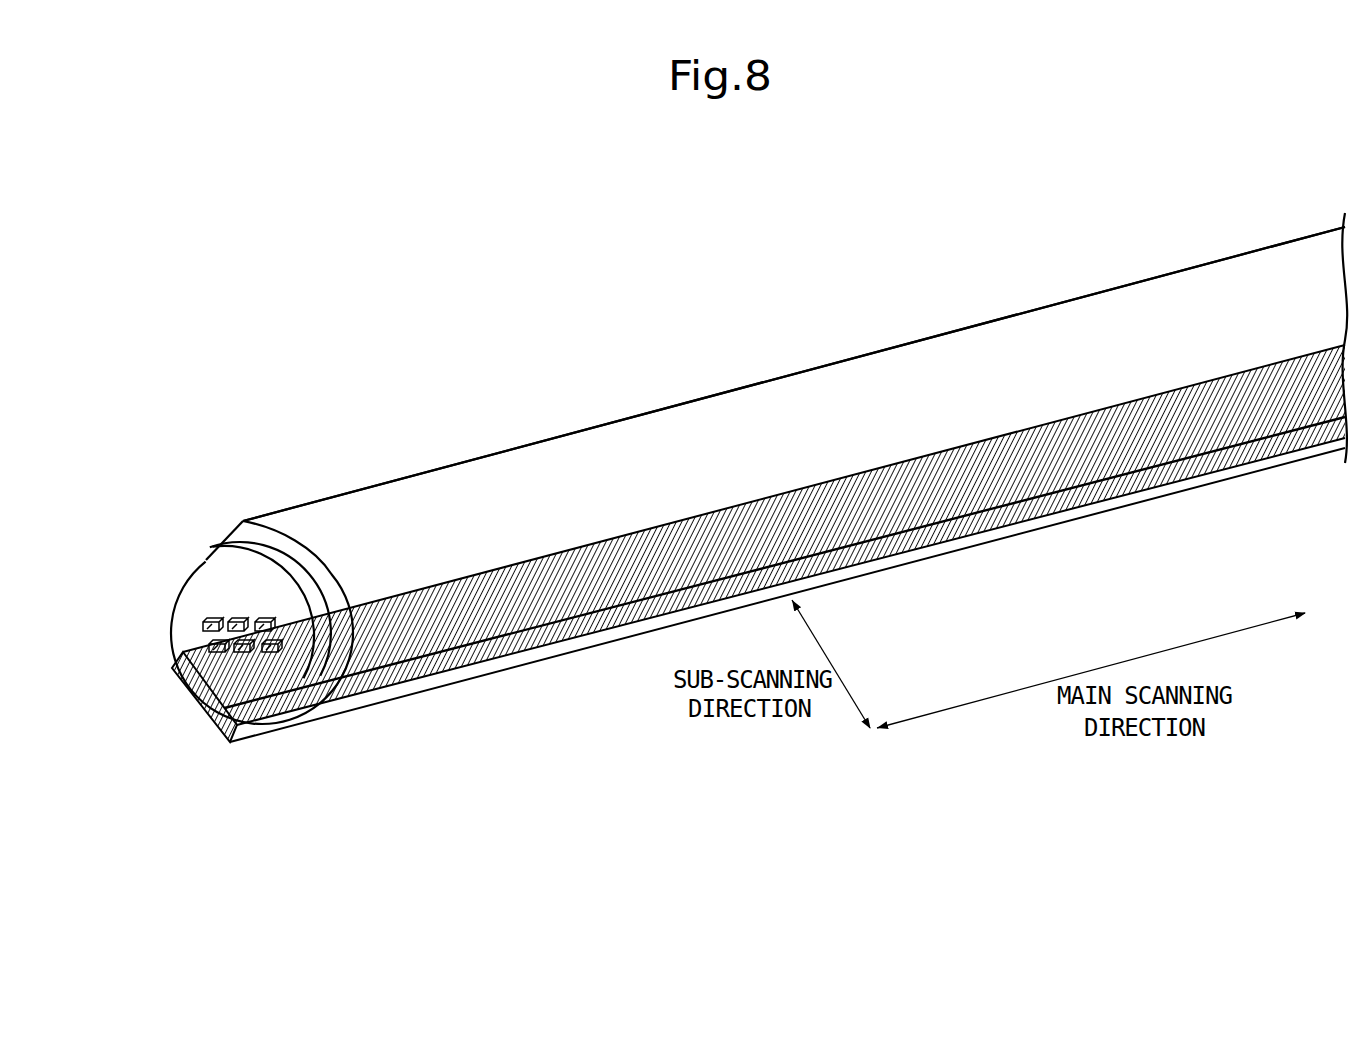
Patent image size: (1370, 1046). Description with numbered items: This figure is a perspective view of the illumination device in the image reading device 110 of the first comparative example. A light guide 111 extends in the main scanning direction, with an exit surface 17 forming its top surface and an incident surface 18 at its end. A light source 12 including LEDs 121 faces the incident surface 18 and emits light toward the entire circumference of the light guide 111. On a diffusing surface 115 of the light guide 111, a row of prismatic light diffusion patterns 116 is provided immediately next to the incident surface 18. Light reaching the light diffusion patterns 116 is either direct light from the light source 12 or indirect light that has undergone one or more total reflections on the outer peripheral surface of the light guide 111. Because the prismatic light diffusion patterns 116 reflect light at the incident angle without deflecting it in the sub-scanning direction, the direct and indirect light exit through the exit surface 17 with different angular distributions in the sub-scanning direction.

The image reading device 110 is at (762, 310).
The light guide 111 is at (928, 336).
The exit surface 17 is at (1038, 322).
The light source 12 is at (178, 578).
The incident surface 18 is at (293, 543).
The LEDs 121 is at (256, 632).
The diffusing surface 115 is at (488, 638).
The light diffusion patterns 116 is at (648, 618).